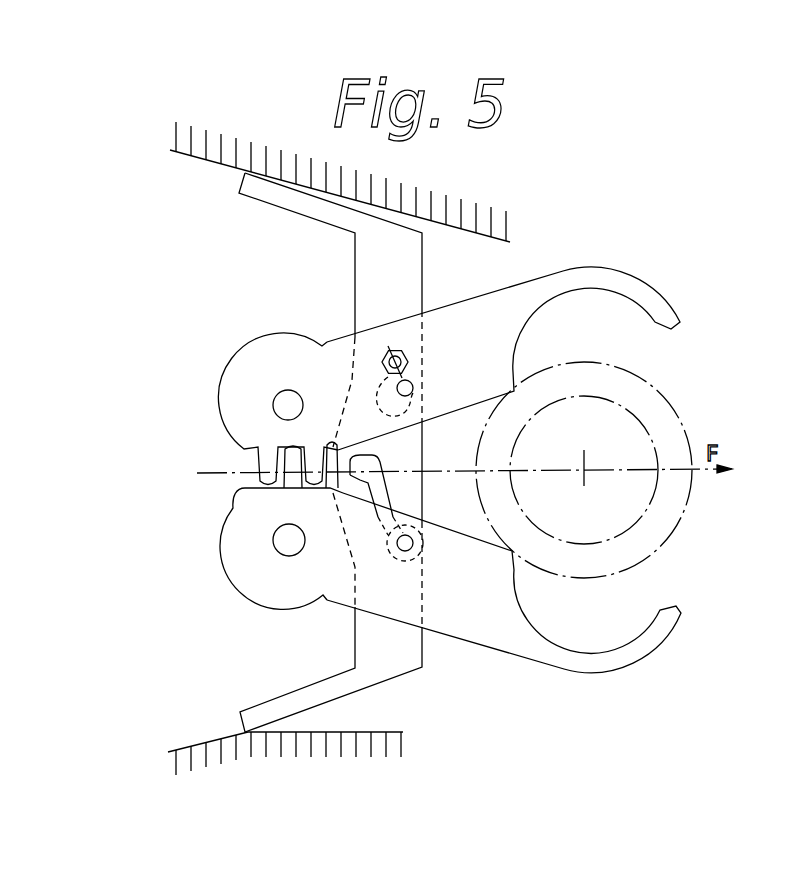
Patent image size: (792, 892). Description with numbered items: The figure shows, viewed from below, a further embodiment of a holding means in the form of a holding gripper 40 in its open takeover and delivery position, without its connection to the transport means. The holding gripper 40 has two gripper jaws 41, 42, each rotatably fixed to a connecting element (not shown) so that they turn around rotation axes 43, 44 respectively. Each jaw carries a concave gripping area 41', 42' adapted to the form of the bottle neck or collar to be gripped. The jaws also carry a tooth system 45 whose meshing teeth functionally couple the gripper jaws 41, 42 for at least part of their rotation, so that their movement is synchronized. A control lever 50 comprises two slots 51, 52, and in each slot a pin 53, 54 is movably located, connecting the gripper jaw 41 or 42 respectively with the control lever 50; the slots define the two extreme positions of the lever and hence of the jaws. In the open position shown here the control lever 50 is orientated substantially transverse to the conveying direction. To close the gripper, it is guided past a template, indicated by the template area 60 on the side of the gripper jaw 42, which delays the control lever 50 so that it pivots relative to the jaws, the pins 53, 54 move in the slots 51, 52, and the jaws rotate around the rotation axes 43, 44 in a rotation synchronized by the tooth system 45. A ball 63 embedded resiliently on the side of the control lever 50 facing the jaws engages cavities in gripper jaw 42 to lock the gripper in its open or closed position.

The holding gripper 40 is at (688, 298).
The gripper jaw 41 is at (504, 628).
The concave gripping area 41' is at (584, 607).
The gripper jaw 42 is at (503, 318).
The concave gripping area 42' is at (626, 334).
The rotation axis 43 is at (289, 540).
The rotation axis 44 is at (283, 397).
The tooth system 45 is at (222, 461).
The control lever 50 is at (375, 275).
The slot 51 is at (382, 483).
The slot 52 is at (412, 420).
The pin 53 is at (417, 568).
The pin 54 is at (414, 390).
The template area 60 is at (222, 164).
The ball 63 is at (408, 349).